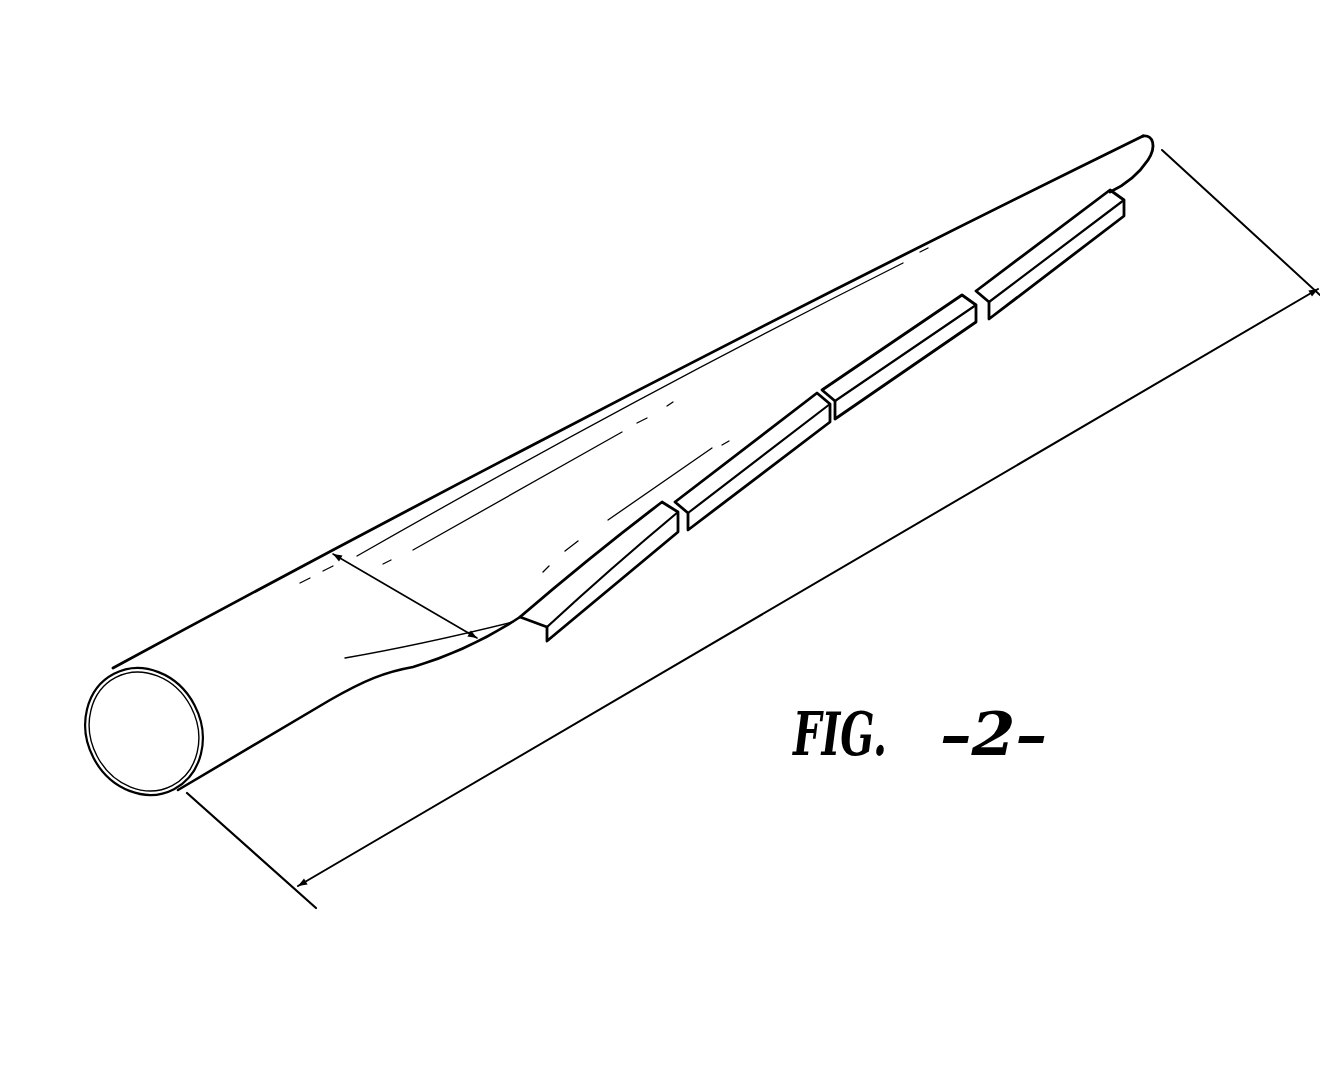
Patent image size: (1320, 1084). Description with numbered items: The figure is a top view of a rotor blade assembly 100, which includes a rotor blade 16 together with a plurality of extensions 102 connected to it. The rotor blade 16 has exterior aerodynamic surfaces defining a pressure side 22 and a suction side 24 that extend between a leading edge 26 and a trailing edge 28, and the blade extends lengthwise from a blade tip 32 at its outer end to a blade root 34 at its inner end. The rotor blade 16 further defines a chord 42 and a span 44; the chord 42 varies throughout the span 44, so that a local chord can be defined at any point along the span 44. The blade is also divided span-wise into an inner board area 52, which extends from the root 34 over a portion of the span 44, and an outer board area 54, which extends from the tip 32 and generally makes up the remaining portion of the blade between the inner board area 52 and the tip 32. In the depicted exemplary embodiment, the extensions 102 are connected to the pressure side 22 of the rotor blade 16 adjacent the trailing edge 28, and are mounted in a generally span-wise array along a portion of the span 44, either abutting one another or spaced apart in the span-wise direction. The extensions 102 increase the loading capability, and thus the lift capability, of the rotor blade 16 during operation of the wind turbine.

The rotor blade 16 is at (660, 502).
The pressure side 22 is at (397, 688).
The suction side 24 is at (888, 290).
The leading edge 26 is at (432, 498).
The trailing edge 28 is at (756, 432).
The blade tip 32 is at (1160, 131).
The blade root 34 is at (150, 757).
The chord 42 is at (392, 589).
The span 44 is at (957, 510).
The inner board area 52 is at (578, 470).
The outer board area 54 is at (839, 312).
The rotor blade assembly 100 is at (703, 415).
The extension 102 is at (751, 505).